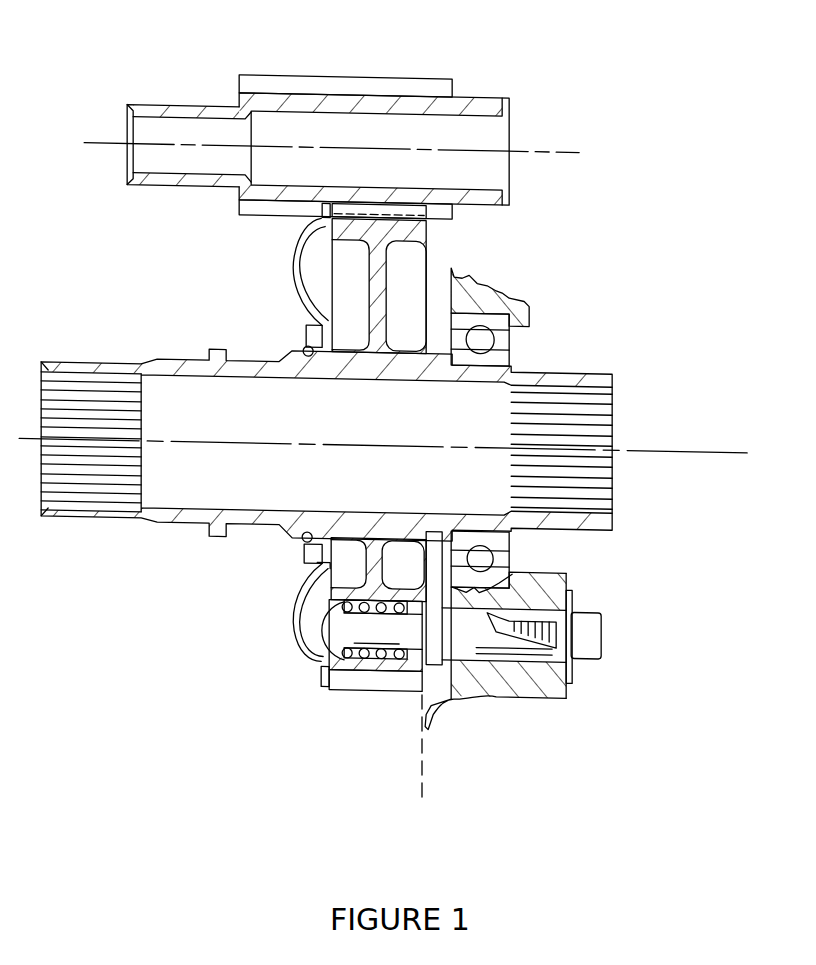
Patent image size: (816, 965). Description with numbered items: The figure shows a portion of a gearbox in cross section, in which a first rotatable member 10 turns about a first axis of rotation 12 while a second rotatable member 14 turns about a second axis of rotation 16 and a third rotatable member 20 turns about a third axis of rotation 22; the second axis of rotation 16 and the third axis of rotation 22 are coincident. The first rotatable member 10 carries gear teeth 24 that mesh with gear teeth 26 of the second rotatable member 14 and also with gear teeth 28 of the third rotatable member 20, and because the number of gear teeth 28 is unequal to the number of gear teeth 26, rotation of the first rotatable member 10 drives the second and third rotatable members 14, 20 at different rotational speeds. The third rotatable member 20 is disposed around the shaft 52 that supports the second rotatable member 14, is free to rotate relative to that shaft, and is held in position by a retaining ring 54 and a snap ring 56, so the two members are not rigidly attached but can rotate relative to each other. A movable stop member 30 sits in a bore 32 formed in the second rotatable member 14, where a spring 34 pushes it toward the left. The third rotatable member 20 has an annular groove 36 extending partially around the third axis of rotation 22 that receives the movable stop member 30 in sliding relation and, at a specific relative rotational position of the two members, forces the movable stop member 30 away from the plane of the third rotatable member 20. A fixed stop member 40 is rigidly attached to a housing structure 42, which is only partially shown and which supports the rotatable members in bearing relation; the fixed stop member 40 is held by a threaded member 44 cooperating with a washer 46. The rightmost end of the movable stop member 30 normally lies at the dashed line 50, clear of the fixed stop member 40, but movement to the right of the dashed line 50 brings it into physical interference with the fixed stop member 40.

The first rotatable member 10 is at (506, 100).
The first axis of rotation 12 is at (562, 148).
The second rotatable member 14 is at (418, 232).
The second axis of rotation 16 is at (630, 449).
The third rotatable member 20 is at (323, 320).
The third axis of rotation 22 is at (707, 451).
The gear teeth 24 is at (282, 83).
The gear teeth 26 is at (413, 208).
The gear teeth 28 is at (323, 205).
The movable stop member 30 is at (322, 668).
The bore 32 is at (402, 633).
The spring 34 is at (378, 602).
The annular groove 36 is at (298, 262).
The fixed stop member 40 is at (470, 647).
The housing structure 42 is at (553, 690).
The threaded member 44 is at (592, 641).
The washer 46 is at (568, 597).
The dashed line 50 is at (425, 787).
The shaft 52 is at (337, 372).
The retaining ring 54 is at (320, 560).
The snap ring 56 is at (302, 545).